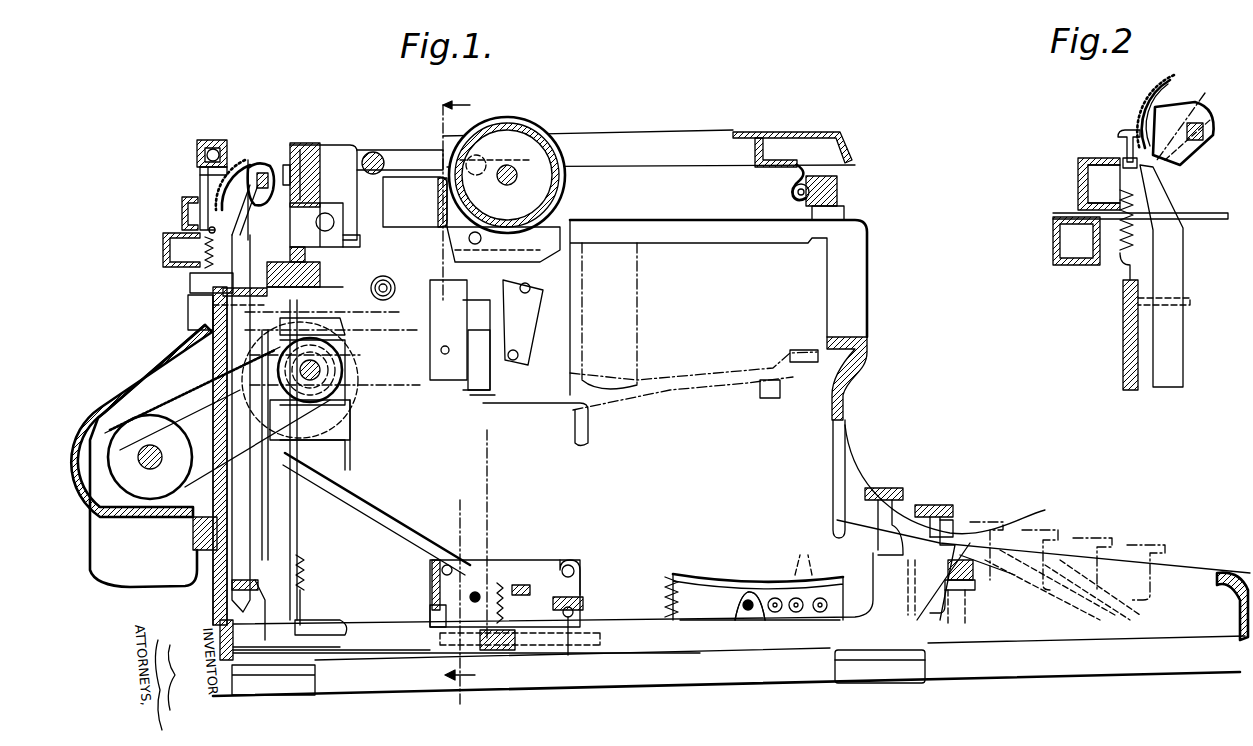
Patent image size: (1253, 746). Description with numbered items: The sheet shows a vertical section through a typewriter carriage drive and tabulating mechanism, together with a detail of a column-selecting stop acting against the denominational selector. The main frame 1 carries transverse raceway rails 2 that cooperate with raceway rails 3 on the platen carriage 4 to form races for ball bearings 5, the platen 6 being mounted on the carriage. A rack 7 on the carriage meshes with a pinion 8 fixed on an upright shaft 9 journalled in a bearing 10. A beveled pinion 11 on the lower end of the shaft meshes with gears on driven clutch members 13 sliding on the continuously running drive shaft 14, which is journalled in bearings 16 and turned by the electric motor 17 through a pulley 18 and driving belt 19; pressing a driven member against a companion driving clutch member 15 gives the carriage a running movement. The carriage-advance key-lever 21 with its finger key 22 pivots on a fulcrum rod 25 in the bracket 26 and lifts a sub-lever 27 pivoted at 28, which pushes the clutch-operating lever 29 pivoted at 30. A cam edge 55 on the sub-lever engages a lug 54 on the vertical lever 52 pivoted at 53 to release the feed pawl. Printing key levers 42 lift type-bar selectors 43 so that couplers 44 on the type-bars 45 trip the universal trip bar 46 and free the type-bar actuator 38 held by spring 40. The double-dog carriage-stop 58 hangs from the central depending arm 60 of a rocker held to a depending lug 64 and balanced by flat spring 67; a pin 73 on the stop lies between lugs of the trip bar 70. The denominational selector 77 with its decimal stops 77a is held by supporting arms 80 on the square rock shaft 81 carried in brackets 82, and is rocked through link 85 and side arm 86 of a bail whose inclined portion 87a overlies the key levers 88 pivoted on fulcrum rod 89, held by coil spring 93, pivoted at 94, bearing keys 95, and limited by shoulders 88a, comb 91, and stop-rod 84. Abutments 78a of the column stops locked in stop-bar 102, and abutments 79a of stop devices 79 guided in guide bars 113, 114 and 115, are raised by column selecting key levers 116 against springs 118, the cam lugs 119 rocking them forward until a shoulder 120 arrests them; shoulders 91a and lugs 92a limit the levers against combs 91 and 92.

In FIG. 1, the main frame 1 is at (825, 258).
In FIG. 2, the main frame 1 is at (1203, 213).
In FIG. 1, the raceway rail 2 is at (840, 190).
In FIG. 1, the raceway rail 3 is at (790, 183).
In FIG. 1, the platen carriage 4 is at (745, 132).
In FIG. 1, the ball bearing 5 is at (790, 197).
In FIG. 1, the platen 6 is at (551, 120).
In FIG. 1, the rack 7 is at (345, 250).
In FIG. 1, the pinion 8 is at (288, 246).
In FIG. 1, the upright shaft 9 is at (361, 290).
In FIG. 1, the bearing 10 is at (305, 283).
In FIG. 1, the beveled pinion 11 is at (340, 375).
In FIG. 1, the driven clutch member 13 is at (340, 410).
In FIG. 1, the drive shaft 14 is at (360, 340).
In FIG. 1, the driving clutch member 15 is at (345, 390).
In FIG. 1, the bearing 16 is at (345, 440).
In FIG. 1, the electric motor 17 is at (144, 456).
In FIG. 1, the pulley 18 is at (158, 480).
In FIG. 1, the driving belt 19 is at (200, 455).
In FIG. 1, the carriage-advance key-lever 21 is at (415, 652).
In FIG. 1, the finger key 22 is at (955, 515).
In FIG. 1, the fulcrum rod 25 is at (570, 655).
In FIG. 1, the bracket 26 is at (585, 605).
In FIG. 1, the sub-lever 27 is at (304, 595).
In FIG. 1, the pivot 28 is at (310, 618).
In FIG. 1, the clutch-operating lever 29 is at (320, 475).
In FIG. 1, the pivot 30 is at (665, 605).
In FIG. 1, the type-bar actuator 38 is at (500, 400).
In FIG. 1, the spring 40 is at (410, 290).
In FIG. 1, the printing key lever 42 is at (508, 650).
In FIG. 1, the type-bar selector 43 is at (492, 505).
In FIG. 1, the coupler 44 is at (515, 415).
In FIG. 1, the type-bar 45 is at (678, 395).
In FIG. 1, the universal trip bar 46 is at (470, 410).
In FIG. 1, the vertical lever 52 is at (295, 480).
In FIG. 1, the pivot 53 is at (300, 475).
In FIG. 1, the lug 54 is at (274, 610).
In FIG. 1, the cam edge 55 is at (308, 570).
In FIG. 1, the double-dog carriage-stop 58 is at (370, 150).
In FIG. 1, the central depending arm 60 is at (345, 150).
In FIG. 1, the depending lug 64 is at (285, 160).
In FIG. 1, the flat spring 67 is at (305, 160).
In FIG. 1, the trip bar 70 is at (262, 165).
In FIG. 1, the pin 73 is at (248, 221).
In FIG. 1, the denominational selector 77 is at (245, 165).
In FIG. 2, the denominational selector 77 is at (1183, 115).
In FIG. 2, the decimal stop 77a is at (1168, 83).
In FIG. 1, the abutment 78a is at (205, 163).
In FIG. 1, the column stop device 79 is at (232, 560).
In FIG. 2, the column stop device 79 is at (1185, 268).
In FIG. 1, the abutment 79a is at (200, 182).
In FIG. 2, the abutment 79a is at (1133, 126).
In FIG. 2, the supporting arm 80 is at (1175, 130).
In FIG. 2, the rock shaft 81 is at (1200, 148).
In FIG. 1, the bracket 82 is at (247, 160).
In FIG. 1, the stop-rod 84 is at (463, 580).
In FIG. 1, the link 85 is at (395, 520).
In FIG. 1, the side arm 86 is at (535, 563).
In FIG. 1, the inclined portion 87a is at (430, 578).
In FIG. 1, the denominational-point selecting key lever 88 is at (430, 612).
In FIG. 1, the shoulder 88a is at (835, 515).
In FIG. 1, the fulcrum rod 89 is at (748, 595).
In FIG. 1, the combined return stop-bar and guide-comb 91 is at (912, 500).
In FIG. 1, the shoulder 91a is at (1005, 525).
In FIG. 1, the stop device 92 is at (975, 575).
In FIG. 1, the lug 92a is at (965, 525).
In FIG. 1, the coil spring 93 is at (503, 580).
In FIG. 1, the pivot 94 is at (578, 565).
In FIG. 1, the key 95 is at (880, 490).
In FIG. 1, the stop-bar 102 is at (200, 148).
In FIG. 1, the guide bar 113 is at (183, 208).
In FIG. 2, the guide bar 113 is at (1080, 162).
In FIG. 1, the guide bar 114 is at (190, 302).
In FIG. 2, the guide bar 114 is at (1190, 302).
In FIG. 1, the guide bar 115 is at (258, 580).
In FIG. 1, the column selecting key lever 116 is at (335, 655).
In FIG. 1, the spring 118 is at (205, 255).
In FIG. 2, the spring 118 is at (1123, 225).
In FIG. 1, the cam lug 119 is at (170, 236).
In FIG. 2, the cam lug 119 is at (1090, 172).
In FIG. 2, the shoulder 120 is at (1125, 160).